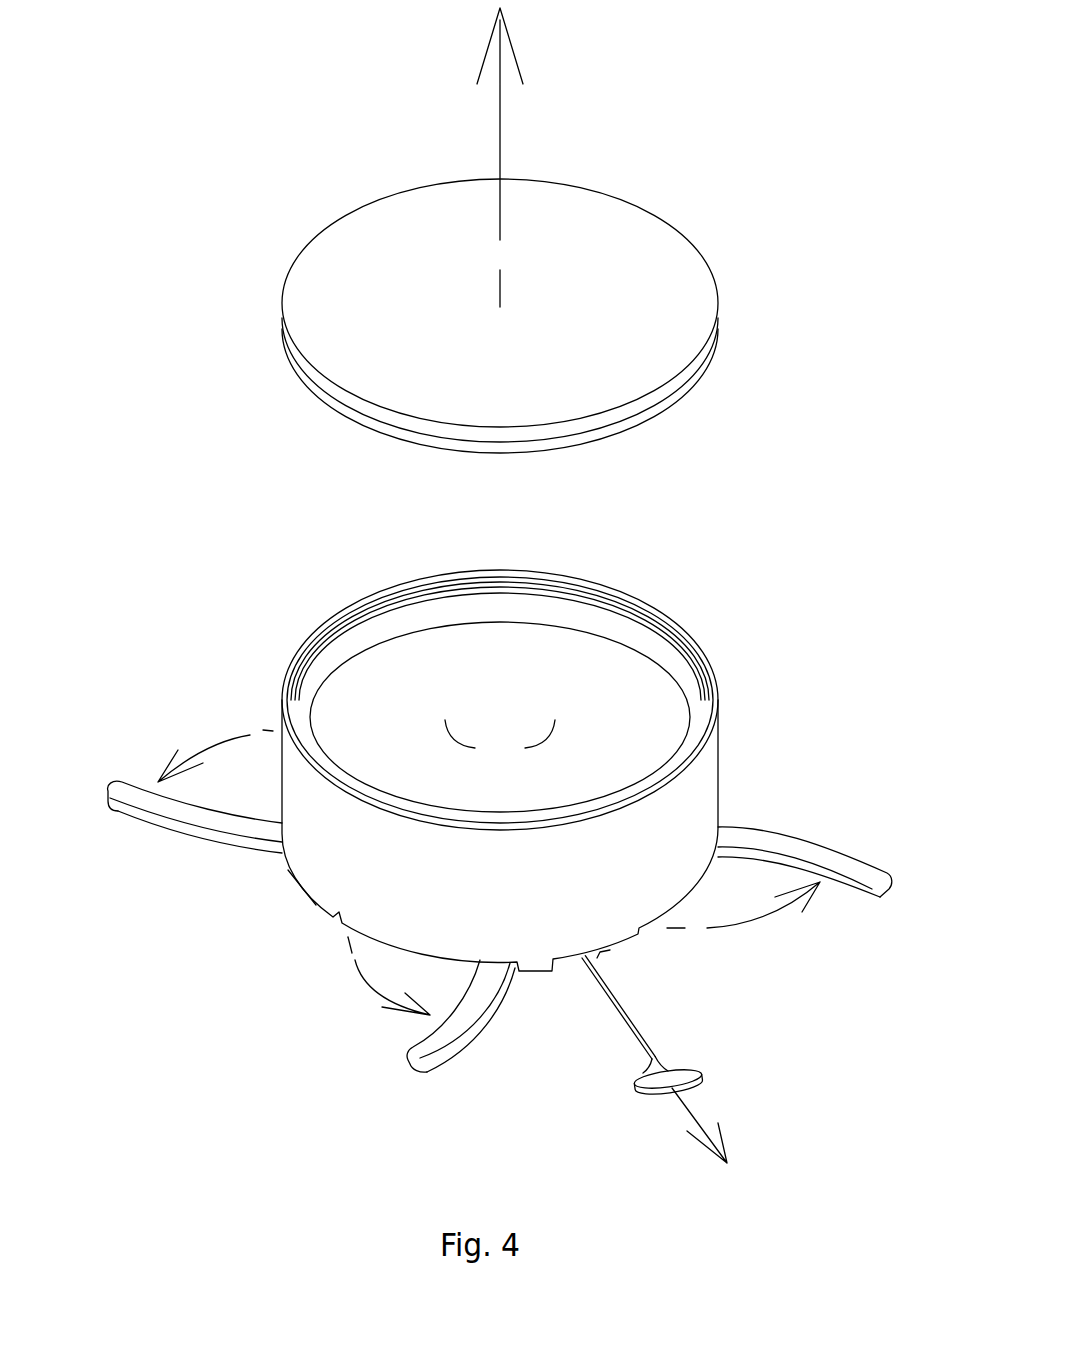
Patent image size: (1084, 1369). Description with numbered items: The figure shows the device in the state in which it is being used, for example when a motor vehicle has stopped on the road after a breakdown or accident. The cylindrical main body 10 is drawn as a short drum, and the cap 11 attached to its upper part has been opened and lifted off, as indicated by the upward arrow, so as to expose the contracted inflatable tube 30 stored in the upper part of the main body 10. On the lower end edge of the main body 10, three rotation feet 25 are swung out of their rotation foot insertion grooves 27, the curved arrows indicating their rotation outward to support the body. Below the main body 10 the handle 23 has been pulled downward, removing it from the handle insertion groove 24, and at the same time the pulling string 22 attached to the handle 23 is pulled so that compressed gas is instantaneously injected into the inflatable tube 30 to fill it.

The main body 10 is at (708, 768).
The cap 11 is at (670, 246).
The pulling string 22 is at (618, 1017).
The handle 23 is at (670, 1067).
The handle insertion groove 24 is at (600, 955).
The rotation foot 25 is at (190, 835).
The rotation foot insertion groove 27 is at (400, 957).
The inflatable tube 30 is at (623, 668).